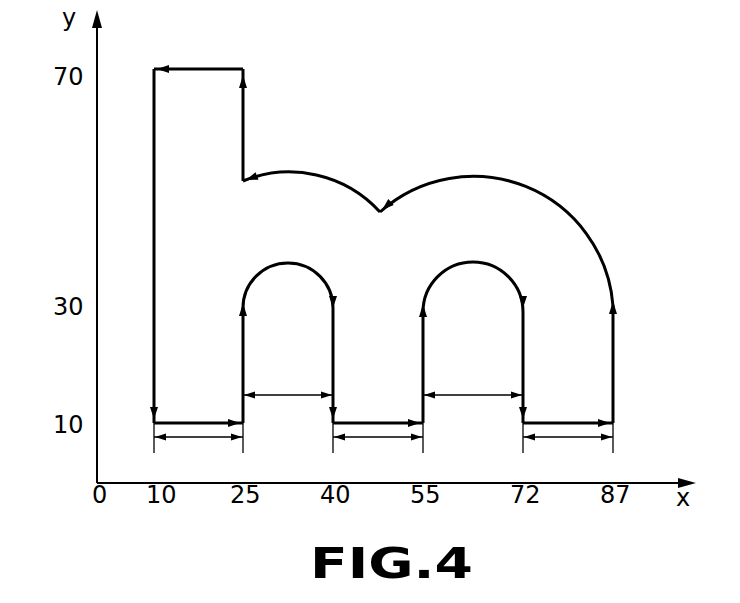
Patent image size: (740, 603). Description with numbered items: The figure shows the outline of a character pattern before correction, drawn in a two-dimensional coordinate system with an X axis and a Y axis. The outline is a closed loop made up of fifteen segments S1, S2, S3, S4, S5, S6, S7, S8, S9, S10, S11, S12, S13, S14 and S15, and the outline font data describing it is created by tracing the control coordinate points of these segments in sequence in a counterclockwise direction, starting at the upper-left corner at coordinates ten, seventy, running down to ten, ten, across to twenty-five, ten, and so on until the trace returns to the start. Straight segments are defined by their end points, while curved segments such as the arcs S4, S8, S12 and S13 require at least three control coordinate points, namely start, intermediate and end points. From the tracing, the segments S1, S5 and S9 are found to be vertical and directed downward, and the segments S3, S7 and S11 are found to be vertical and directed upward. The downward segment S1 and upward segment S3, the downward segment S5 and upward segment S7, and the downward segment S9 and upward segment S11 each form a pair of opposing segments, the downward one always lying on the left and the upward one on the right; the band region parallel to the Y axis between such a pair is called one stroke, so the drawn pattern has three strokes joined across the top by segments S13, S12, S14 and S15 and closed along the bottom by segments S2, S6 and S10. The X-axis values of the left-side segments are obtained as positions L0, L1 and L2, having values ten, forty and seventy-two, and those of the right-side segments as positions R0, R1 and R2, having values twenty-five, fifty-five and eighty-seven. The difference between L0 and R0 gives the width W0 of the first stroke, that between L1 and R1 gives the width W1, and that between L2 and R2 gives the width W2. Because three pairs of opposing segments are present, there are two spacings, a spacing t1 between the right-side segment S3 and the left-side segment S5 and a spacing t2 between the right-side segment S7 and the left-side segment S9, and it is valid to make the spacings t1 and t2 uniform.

The segment S1 is at (155, 213).
The segment S2 is at (203, 421).
The segment S3 is at (243, 319).
The segment S4 is at (283, 263).
The segment S5 is at (334, 360).
The segment S6 is at (380, 421).
The segment S7 is at (422, 335).
The segment S8 is at (472, 263).
The segment S9 is at (524, 360).
The segment S10 is at (568, 421).
The segment S11 is at (612, 345).
The segment S12 is at (485, 178).
The segment S13 is at (300, 176).
The segment S14 is at (243, 149).
The segment S15 is at (200, 71).
The width W0 is at (198, 446).
The width W1 is at (378, 446).
The width W2 is at (568, 446).
The spacing t1 is at (288, 382).
The spacing t2 is at (473, 382).
The position L0 is at (156, 468).
The position R0 is at (242, 468).
The position L1 is at (326, 468).
The position R1 is at (416, 468).
The position L2 is at (516, 468).
The position R2 is at (608, 468).